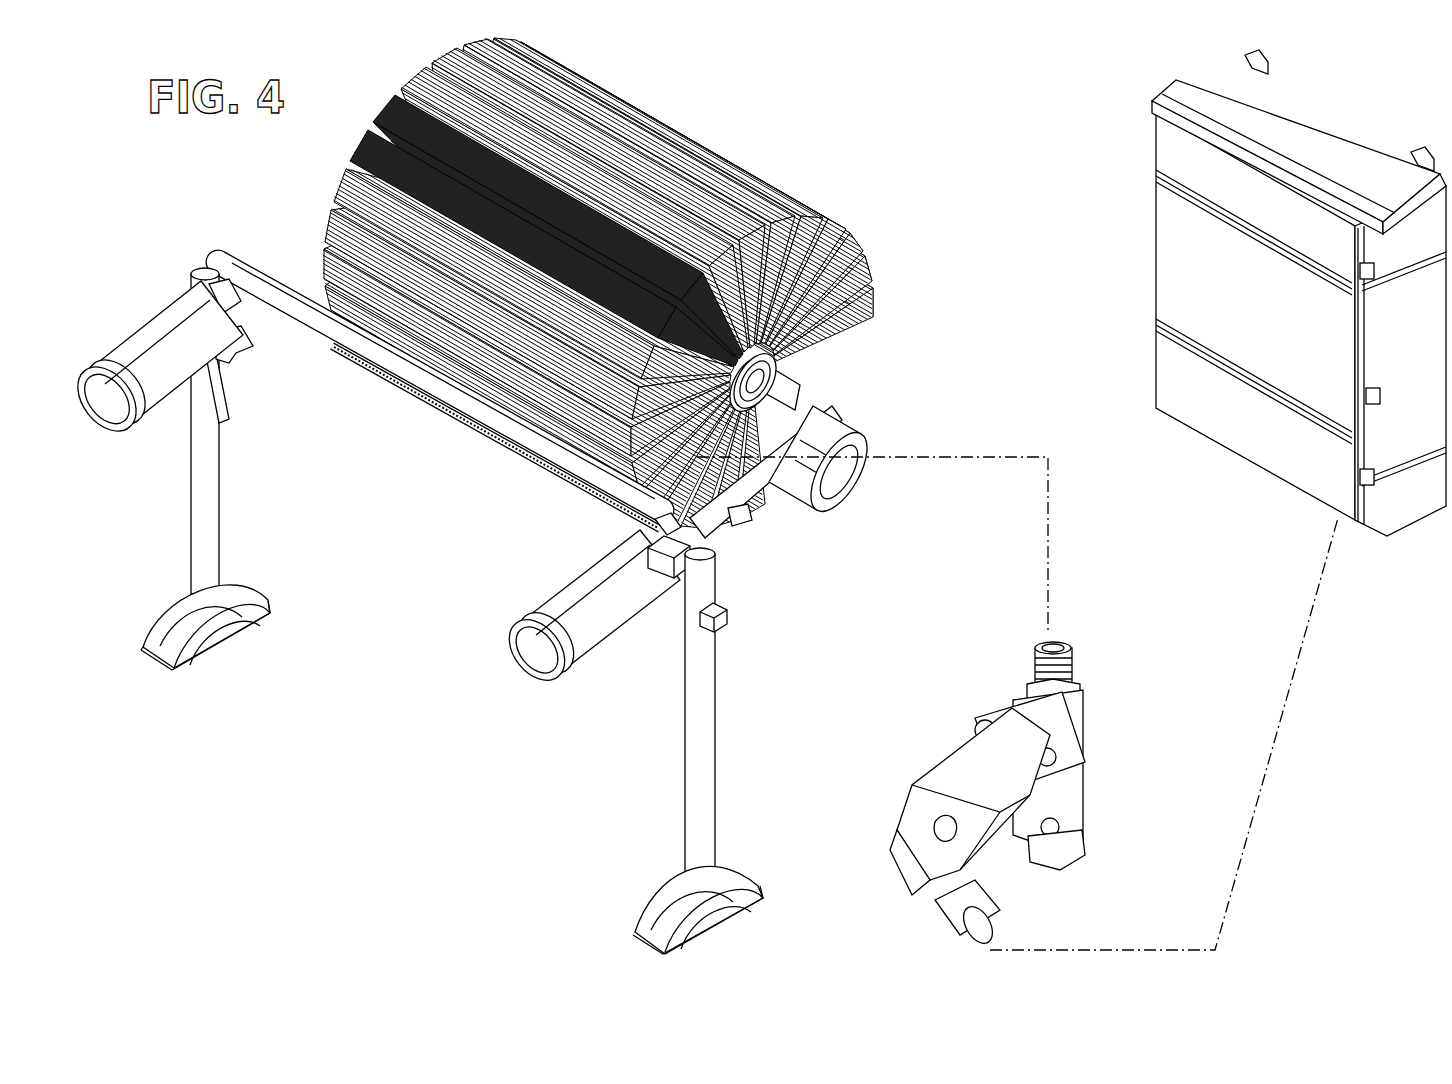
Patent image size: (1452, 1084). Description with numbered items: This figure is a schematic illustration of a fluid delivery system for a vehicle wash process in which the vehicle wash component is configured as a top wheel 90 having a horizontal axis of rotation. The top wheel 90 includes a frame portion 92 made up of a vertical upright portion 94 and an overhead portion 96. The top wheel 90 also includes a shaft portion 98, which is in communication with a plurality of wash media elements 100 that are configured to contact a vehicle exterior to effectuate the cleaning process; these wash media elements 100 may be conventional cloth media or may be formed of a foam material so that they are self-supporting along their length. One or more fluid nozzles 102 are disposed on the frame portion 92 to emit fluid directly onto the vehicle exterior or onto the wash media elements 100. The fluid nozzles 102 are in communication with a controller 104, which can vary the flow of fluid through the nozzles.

The top wheel 90 is at (436, 608).
The frame portion 92 is at (608, 497).
The vertical upright portion 94 is at (696, 739).
The overhead portion 96 is at (520, 450).
The shaft portion 98 is at (818, 400).
The wash media elements 100 is at (813, 245).
The fluid nozzles 102 is at (745, 526).
The controller 104 is at (1270, 420).